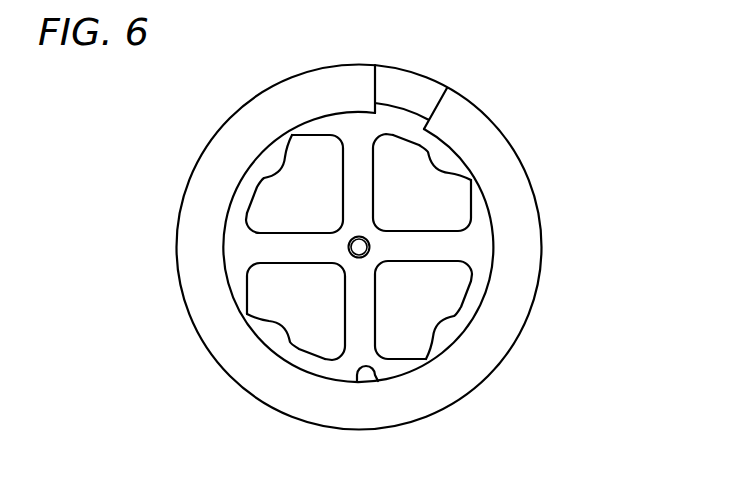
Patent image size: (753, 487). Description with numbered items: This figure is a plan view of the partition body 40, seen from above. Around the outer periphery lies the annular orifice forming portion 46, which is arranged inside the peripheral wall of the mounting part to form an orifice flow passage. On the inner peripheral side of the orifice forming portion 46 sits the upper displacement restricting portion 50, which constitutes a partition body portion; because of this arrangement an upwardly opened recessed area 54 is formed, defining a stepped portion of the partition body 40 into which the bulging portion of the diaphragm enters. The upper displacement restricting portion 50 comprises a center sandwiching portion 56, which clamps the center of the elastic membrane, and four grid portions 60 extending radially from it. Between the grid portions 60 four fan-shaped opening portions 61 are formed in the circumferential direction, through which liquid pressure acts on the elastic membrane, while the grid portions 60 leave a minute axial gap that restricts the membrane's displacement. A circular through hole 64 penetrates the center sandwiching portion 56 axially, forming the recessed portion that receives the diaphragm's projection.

The partition body 40 is at (521, 68).
The orifice forming portion 46 is at (200, 280).
The upper displacement restricting portion 50 is at (262, 240).
The recessed area 54 is at (378, 380).
The center sandwiching portion 56 is at (340, 258).
The grid portions 60 is at (348, 168).
The opening portions 61 is at (262, 207).
The through hole 64 is at (363, 237).